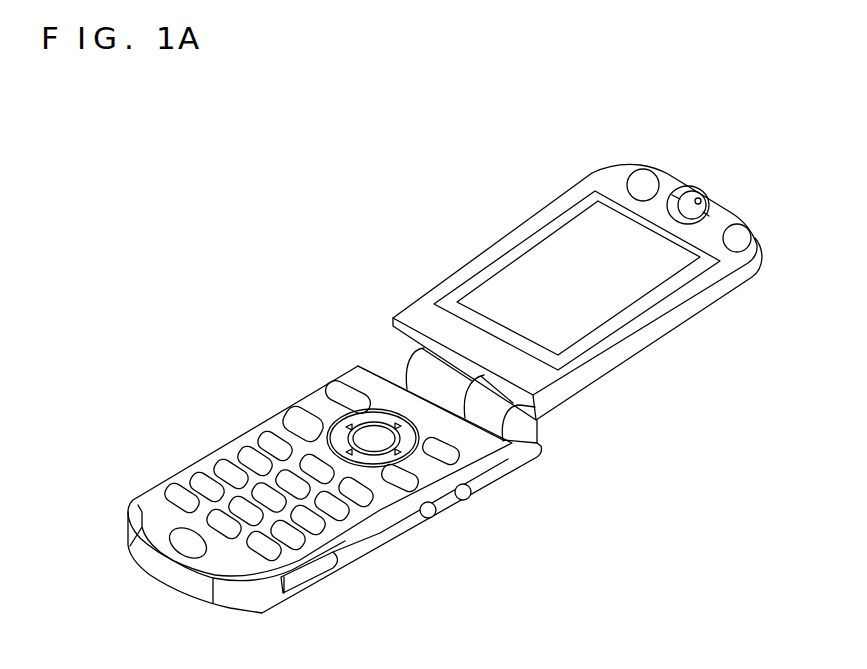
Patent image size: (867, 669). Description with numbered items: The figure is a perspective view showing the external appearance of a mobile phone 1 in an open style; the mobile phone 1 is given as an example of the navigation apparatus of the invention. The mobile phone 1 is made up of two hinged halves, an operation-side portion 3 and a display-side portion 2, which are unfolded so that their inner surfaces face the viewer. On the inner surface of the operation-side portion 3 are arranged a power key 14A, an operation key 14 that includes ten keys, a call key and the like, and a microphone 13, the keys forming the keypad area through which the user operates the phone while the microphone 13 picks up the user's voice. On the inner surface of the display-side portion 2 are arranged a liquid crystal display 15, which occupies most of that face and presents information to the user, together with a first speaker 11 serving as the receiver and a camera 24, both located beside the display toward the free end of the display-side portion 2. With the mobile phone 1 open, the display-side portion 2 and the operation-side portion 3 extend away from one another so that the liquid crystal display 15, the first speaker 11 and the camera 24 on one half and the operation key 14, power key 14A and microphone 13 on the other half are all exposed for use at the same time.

The mobile phone 1 is at (212, 188).
The display-side portion 2 is at (640, 342).
The operation-side portion 3 is at (508, 475).
The first speaker 11 is at (702, 199).
The microphone 13 is at (196, 537).
The operation key 14 is at (324, 367).
The power key 14A is at (368, 497).
The liquid crystal display (LCD) 15 is at (535, 263).
The camera 24 is at (640, 170).